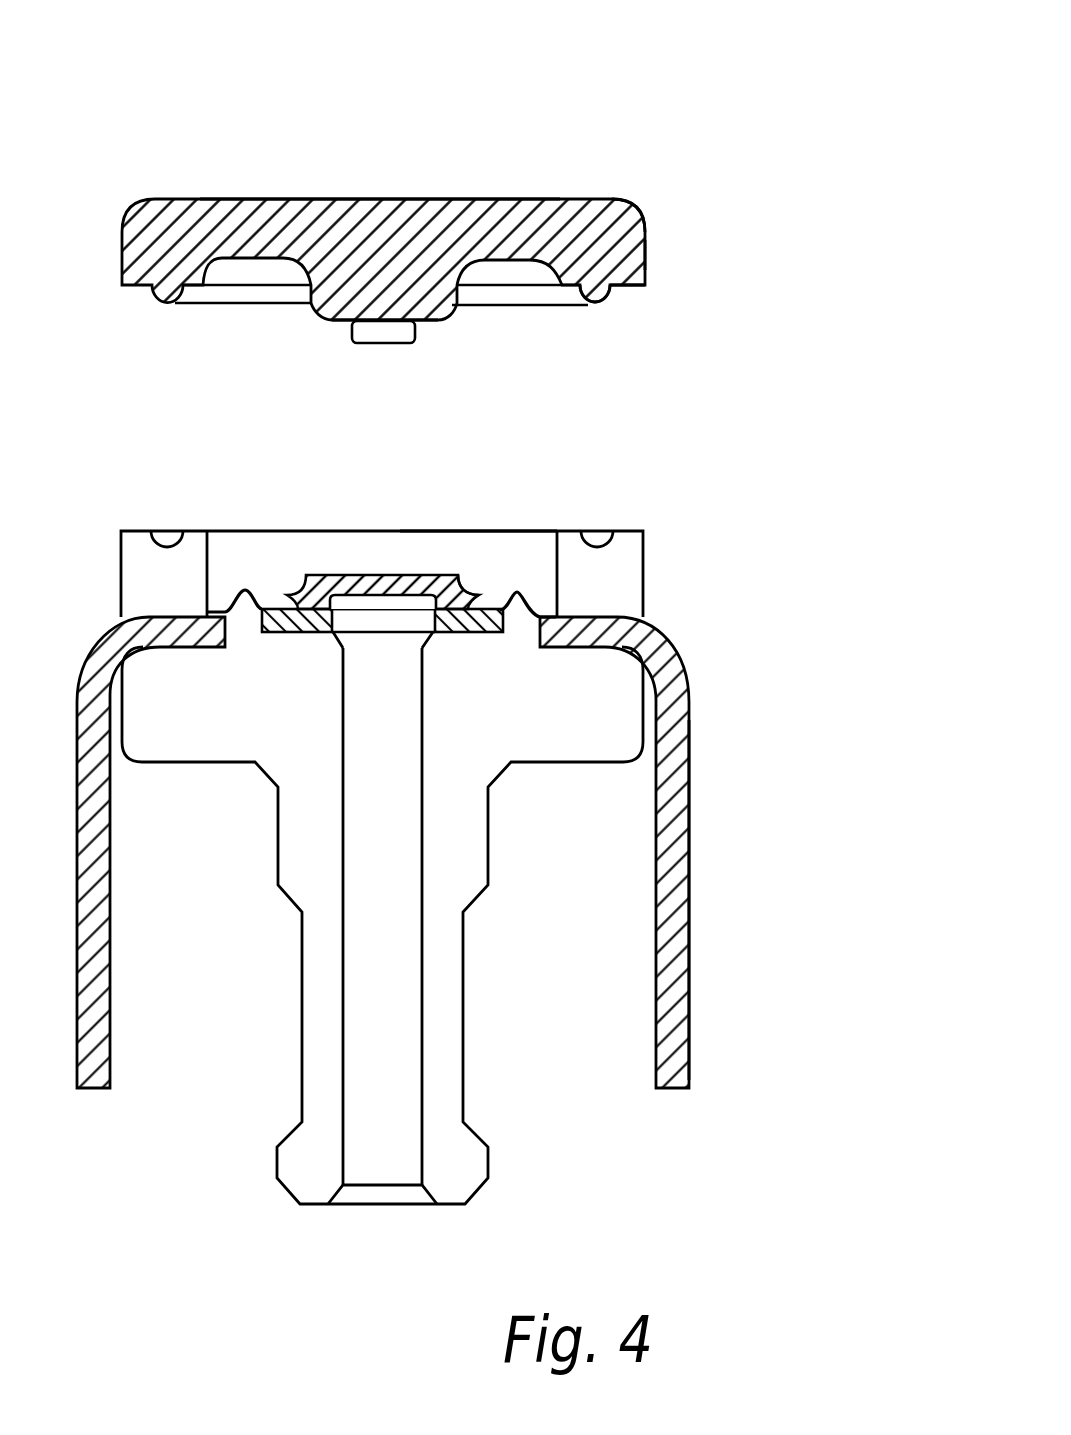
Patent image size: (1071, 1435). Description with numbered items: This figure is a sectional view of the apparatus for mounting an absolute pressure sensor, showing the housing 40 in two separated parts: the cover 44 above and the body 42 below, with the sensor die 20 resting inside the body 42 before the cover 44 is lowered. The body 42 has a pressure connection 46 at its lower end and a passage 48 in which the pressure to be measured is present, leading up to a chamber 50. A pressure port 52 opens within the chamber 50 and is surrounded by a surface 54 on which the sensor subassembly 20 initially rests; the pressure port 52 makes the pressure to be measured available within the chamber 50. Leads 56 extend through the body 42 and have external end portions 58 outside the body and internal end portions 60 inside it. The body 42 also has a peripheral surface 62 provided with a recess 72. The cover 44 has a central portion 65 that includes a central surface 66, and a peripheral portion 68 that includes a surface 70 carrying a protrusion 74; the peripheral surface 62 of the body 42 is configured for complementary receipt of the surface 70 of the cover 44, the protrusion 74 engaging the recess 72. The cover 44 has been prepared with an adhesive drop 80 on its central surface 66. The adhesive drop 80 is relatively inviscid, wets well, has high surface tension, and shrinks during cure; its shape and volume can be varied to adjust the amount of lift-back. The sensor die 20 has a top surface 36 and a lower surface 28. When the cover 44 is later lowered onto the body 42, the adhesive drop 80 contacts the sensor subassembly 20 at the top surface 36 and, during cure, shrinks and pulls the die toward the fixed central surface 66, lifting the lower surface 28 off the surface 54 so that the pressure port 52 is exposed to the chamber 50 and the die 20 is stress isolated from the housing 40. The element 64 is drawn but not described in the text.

The sensor die 20 is at (478, 583).
The lower surface 28 is at (445, 634).
The top surface 36 is at (365, 576).
The housing 40 is at (760, 237).
The body 42 is at (514, 838).
The cover 44 is at (441, 225).
The pressure connection 46 is at (478, 1190).
The passage 48 is at (385, 1177).
The chamber 50 is at (540, 531).
The pressure port 52 is at (373, 645).
The surface 54 is at (275, 640).
The leads 56 is at (674, 647).
The external end portions 58 is at (690, 927).
The internal end portions 60 is at (553, 648).
The peripheral surface 62 is at (140, 529).
The gasket 64 is at (433, 296).
The central portion 65 is at (383, 199).
The central surface 66 is at (420, 320).
The peripheral portion 68 is at (638, 202).
The surface 70 is at (626, 289).
The recess 72 is at (597, 532).
The protrusion 74 is at (595, 304).
The adhesive drop 80 is at (380, 343).